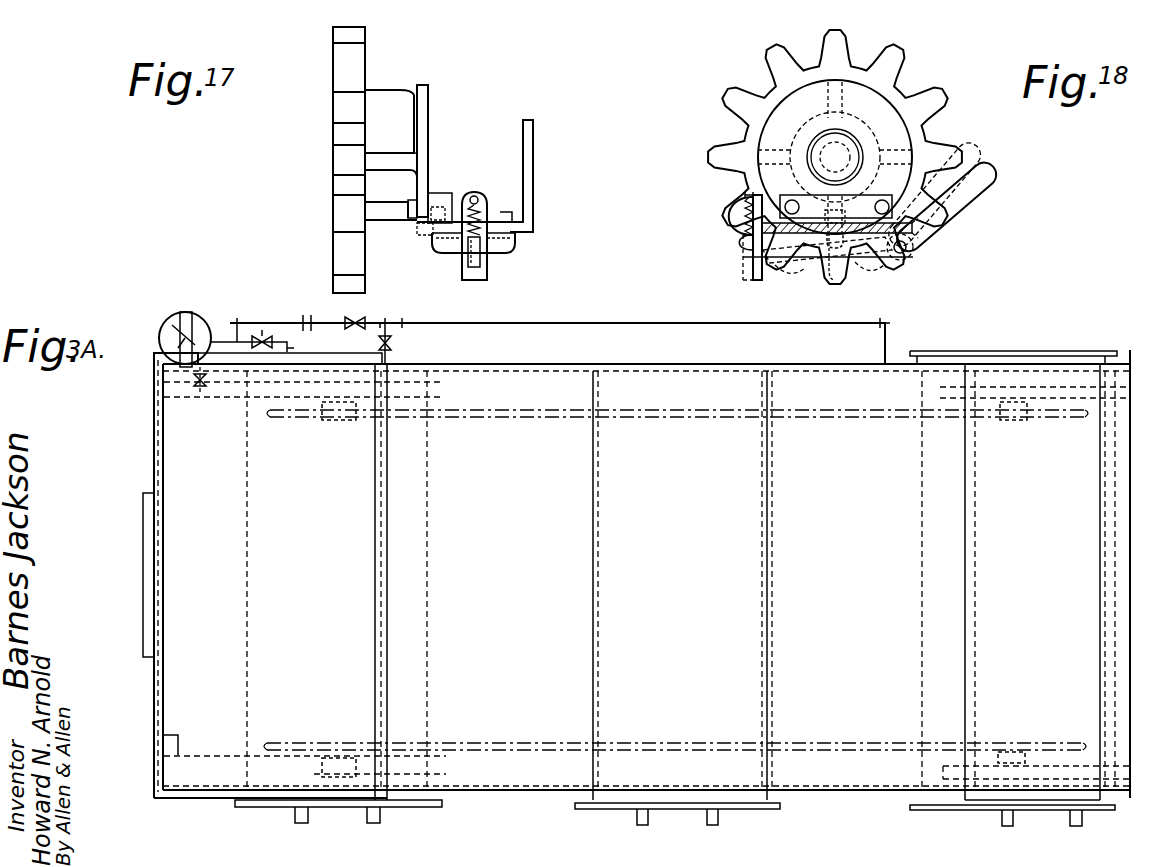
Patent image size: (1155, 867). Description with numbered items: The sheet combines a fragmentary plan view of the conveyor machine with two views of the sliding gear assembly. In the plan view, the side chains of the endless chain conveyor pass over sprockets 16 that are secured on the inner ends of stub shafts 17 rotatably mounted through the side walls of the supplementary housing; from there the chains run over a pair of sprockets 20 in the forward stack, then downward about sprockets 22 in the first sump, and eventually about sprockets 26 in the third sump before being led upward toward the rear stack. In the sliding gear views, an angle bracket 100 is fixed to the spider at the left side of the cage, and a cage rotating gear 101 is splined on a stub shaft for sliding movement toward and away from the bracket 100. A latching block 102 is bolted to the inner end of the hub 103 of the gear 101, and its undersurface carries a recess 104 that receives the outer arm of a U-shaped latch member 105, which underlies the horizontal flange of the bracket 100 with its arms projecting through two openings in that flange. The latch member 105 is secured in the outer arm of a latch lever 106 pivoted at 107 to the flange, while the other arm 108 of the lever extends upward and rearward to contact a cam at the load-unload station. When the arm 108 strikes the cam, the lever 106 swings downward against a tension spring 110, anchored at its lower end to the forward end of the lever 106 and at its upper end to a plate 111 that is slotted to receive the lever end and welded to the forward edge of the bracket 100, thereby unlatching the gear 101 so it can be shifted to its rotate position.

In FIG. 3A, the sprockets 16 is at (1073, 740).
In FIG. 3A, the stub shafts 17 is at (1010, 752).
In FIG. 3A, the sprockets 20 is at (769, 624).
In FIG. 3A, the sprockets 22 is at (943, 578).
In FIG. 3A, the sprockets 26 is at (430, 624).
In FIG. 17, the angle bracket 100 is at (525, 140).
In FIG. 18, the angle bracket 100 is at (791, 248).
In FIG. 17, the cage rotating gear 101 is at (345, 167).
In FIG. 18, the cage rotating gear 101 is at (900, 63).
In FIG. 17, the latching block 102 is at (436, 193).
In FIG. 17, the hub 103 is at (386, 220).
In FIG. 17, the recess 104 is at (419, 237).
In FIG. 17, the latch member 105 is at (512, 247).
In FIG. 18, the latch member 105 is at (850, 262).
In FIG. 18, the latch lever 106 is at (870, 265).
In FIG. 18, the pivot 107 is at (906, 251).
In FIG. 18, the arm 108 is at (985, 152).
In FIG. 17, the tension spring 110 is at (478, 215).
In FIG. 18, the tension spring 110 is at (748, 218).
In FIG. 17, the plate 111 is at (471, 195).
In FIG. 18, the plate 111 is at (750, 190).